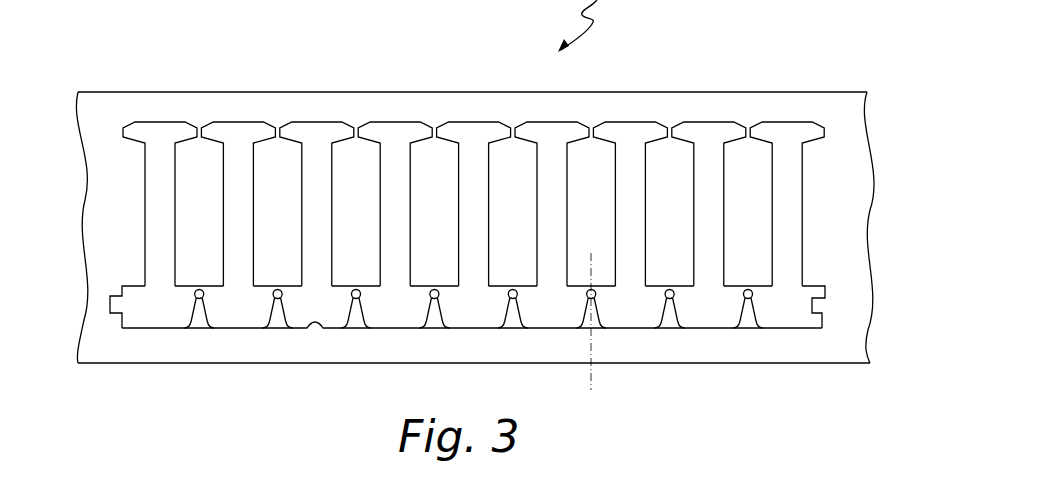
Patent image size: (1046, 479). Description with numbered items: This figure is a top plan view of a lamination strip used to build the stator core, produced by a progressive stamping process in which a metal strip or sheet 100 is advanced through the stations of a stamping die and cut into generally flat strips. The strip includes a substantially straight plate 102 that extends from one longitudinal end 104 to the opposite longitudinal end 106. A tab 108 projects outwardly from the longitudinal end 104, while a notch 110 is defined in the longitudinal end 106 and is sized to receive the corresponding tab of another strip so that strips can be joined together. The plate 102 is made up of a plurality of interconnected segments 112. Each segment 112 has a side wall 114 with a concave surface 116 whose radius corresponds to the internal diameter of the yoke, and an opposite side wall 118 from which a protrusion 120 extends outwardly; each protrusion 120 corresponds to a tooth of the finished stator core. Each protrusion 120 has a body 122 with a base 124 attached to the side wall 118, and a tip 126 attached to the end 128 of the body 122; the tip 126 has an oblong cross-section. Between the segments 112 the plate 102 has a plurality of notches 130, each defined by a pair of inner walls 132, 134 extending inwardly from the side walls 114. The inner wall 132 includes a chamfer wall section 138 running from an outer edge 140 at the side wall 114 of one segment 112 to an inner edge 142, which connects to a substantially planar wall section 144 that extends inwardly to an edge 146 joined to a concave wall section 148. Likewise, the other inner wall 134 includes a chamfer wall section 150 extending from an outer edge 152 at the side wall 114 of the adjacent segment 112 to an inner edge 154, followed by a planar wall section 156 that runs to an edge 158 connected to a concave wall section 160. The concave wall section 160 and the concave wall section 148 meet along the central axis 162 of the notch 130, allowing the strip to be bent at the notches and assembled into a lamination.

The metal strip or sheet 100 is at (178, 92).
The plate 102 is at (122, 328).
The longitudinal end 104 is at (112, 295).
The longitudinal end 106 is at (823, 314).
The tab 108 is at (111, 318).
The notch 110 is at (830, 301).
The segment 112 is at (175, 320).
The side wall 114 is at (368, 330).
The surface 116 is at (397, 330).
The side wall 118 is at (420, 286).
The protrusion 120 is at (400, 196).
The body 122 is at (384, 234).
The base 124 is at (388, 282).
The tip 126 is at (395, 130).
The end 128 is at (396, 163).
The notch 130 is at (514, 276).
The inner wall 132 is at (600, 308).
The inner wall 134 is at (583, 310).
The chamfer wall section 138 is at (601, 332).
The outer edge 140 is at (597, 335).
The inner edge 142 is at (605, 313).
The planar wall section 144 is at (602, 313).
The edge 146 is at (598, 302).
The concave wall section 148 is at (597, 297).
The chamfer wall section 150 is at (589, 335).
The outer edge 152 is at (578, 332).
The inner edge 154 is at (558, 330).
The planar wall section 156 is at (587, 302).
The edge 158 is at (586, 298).
The concave wall section 160 is at (588, 296).
The central axis 162 is at (591, 395).